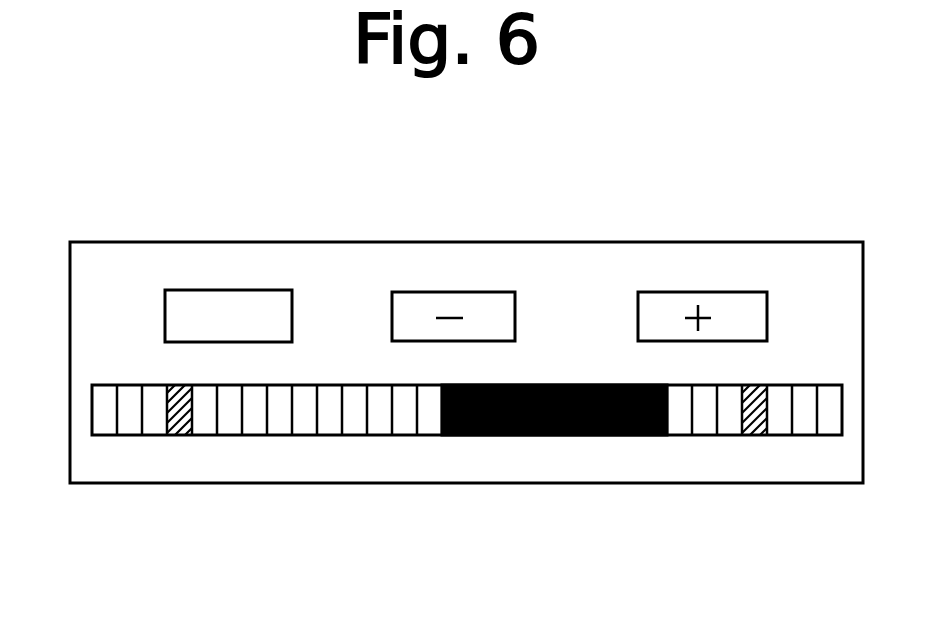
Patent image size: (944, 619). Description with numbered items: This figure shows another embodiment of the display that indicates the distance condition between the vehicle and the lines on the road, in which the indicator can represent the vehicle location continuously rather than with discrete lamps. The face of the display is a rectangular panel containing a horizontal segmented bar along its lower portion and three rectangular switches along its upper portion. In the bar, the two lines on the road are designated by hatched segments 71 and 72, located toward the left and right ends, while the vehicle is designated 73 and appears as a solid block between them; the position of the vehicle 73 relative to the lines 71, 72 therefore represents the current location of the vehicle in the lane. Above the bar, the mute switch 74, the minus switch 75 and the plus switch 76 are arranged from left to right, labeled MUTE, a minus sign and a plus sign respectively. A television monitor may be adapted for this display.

The line on the road 71 is at (178, 435).
The line on the road 72 is at (752, 435).
The vehicle 73 is at (552, 435).
The mute switch 74 is at (232, 290).
The minus switch 75 is at (465, 292).
The plus switch 76 is at (705, 292).